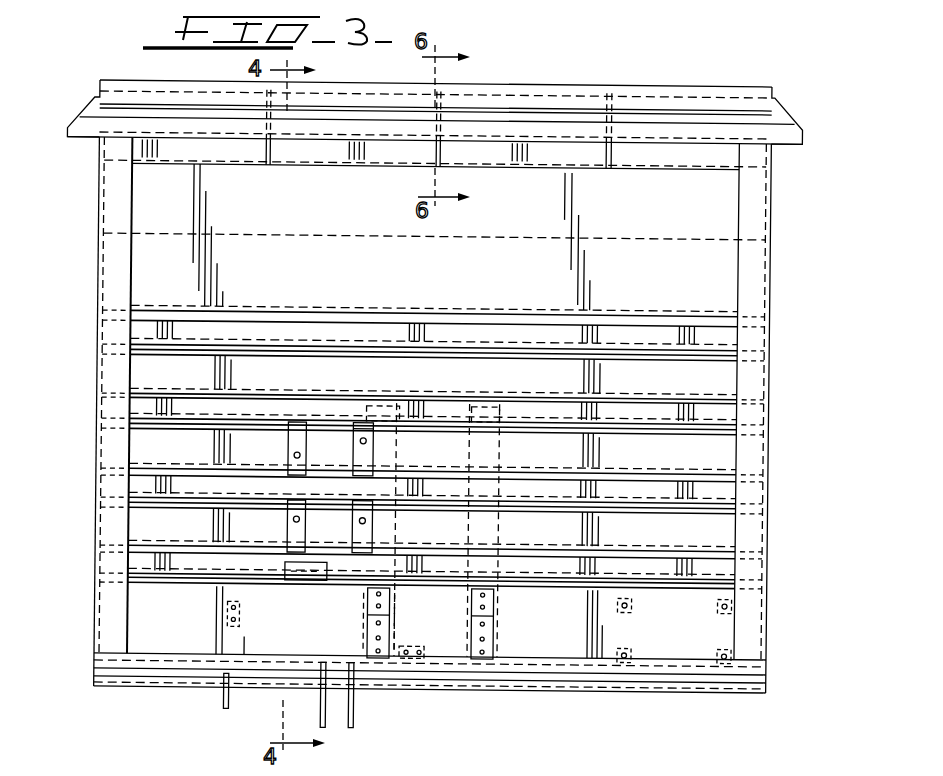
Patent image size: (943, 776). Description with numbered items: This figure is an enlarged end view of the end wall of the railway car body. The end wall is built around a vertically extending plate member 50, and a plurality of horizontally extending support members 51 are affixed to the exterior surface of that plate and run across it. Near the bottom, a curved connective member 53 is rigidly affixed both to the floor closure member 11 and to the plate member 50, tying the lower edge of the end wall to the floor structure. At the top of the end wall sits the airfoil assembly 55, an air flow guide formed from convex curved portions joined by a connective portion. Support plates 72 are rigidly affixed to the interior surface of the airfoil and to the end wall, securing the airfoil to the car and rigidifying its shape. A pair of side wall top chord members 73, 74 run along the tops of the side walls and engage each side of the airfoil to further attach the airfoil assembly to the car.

The floor closure member 11 is at (688, 688).
The vertically extending plate member 50 is at (715, 273).
The horizontally extending support members 51 is at (730, 339).
The curved connective member 53 is at (743, 679).
The airfoil assembly 55 is at (656, 78).
The support plates 72 is at (268, 148).
The side wall top chord member 73 is at (78, 127).
The side wall top chord member 74 is at (792, 133).